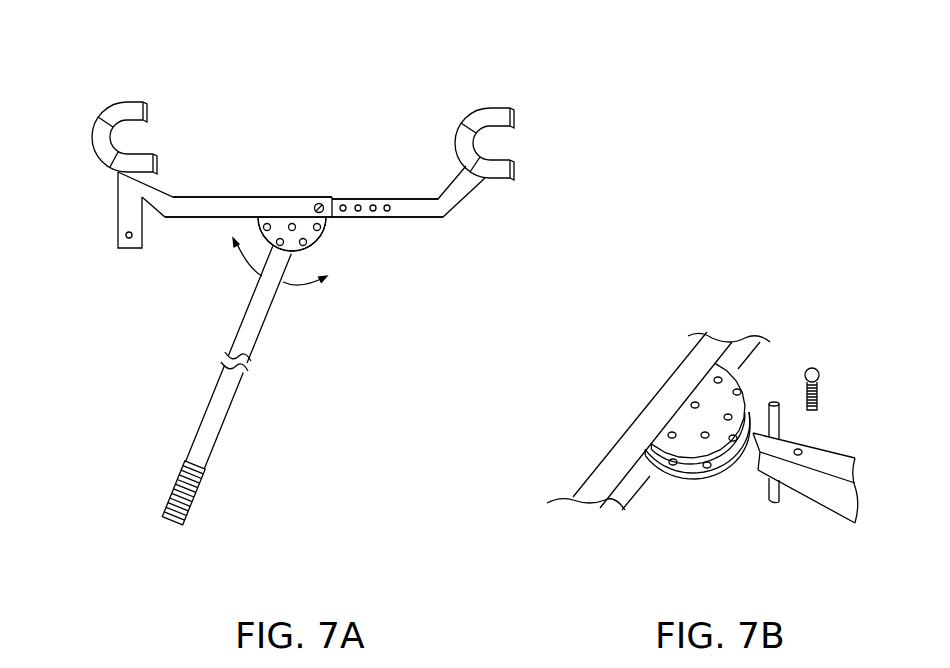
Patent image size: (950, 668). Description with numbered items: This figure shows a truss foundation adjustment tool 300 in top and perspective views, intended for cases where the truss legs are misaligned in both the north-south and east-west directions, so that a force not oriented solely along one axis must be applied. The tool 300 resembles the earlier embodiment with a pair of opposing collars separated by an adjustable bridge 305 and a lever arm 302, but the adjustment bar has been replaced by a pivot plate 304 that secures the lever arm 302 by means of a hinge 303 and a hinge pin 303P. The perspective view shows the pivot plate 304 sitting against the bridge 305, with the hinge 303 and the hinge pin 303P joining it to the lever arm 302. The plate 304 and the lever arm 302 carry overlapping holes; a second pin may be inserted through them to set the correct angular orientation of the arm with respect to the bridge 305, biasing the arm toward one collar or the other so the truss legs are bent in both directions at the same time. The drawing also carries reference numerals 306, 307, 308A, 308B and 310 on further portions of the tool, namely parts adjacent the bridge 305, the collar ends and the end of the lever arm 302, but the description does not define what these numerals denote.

In FIG. 7A, the truss foundation adjustment tool 300 is at (214, 114).
In FIG. 7A, the lever arm 302 is at (268, 434).
In FIG. 7A, the hinge 303 is at (312, 248).
In FIG. 7B, the hinge 303 is at (698, 412).
In FIG. 7B, the hinge pin 303P is at (775, 500).
In FIG. 7A, the pivot plate 304 is at (92, 133).
In FIG. 7B, the pivot plate 304 is at (737, 383).
In FIG. 7A, the adjustable bridge 305 is at (290, 197).
In FIG. 7B, the adjustable bridge 305 is at (712, 333).
In FIG. 7A, the side plate 306 is at (118, 222).
In FIG. 7A, the extension bar 307 is at (437, 198).
In FIG. 7A, the lower clip arm 308A is at (158, 158).
In FIG. 7A, the upper clip arm 308B is at (118, 100).
In FIG. 7A, the threaded end 310 is at (200, 500).